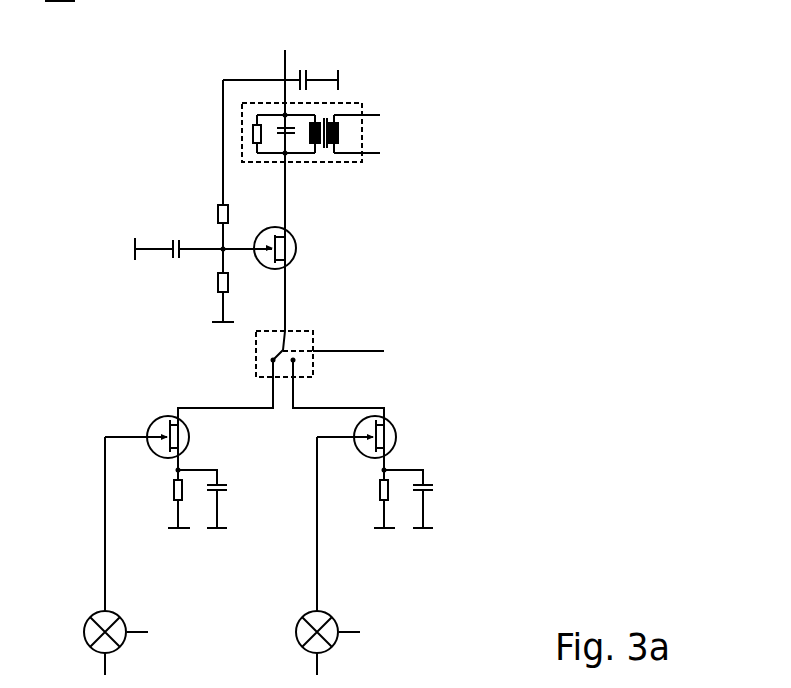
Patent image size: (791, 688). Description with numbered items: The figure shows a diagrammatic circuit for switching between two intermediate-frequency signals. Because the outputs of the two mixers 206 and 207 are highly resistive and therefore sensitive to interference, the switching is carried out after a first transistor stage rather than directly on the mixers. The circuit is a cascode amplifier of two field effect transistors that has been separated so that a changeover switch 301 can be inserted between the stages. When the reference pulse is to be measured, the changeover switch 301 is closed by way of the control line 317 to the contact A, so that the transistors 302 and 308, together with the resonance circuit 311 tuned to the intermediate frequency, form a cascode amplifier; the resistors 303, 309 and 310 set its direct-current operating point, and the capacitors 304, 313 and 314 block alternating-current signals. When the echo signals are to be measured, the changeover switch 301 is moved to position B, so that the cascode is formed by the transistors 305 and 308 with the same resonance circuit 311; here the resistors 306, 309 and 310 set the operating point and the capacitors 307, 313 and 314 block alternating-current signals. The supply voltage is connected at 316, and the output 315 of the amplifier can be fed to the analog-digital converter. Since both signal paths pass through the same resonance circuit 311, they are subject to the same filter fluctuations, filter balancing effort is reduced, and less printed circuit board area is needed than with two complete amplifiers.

The mixer 206 is at (83, 637).
The mixer 207 is at (293, 637).
The changeover switch 301 is at (313, 342).
The transistor 302 is at (150, 422).
The resistor 303 is at (172, 493).
The capacitor 304 is at (222, 480).
The transistor 305 is at (393, 430).
The resistor 306 is at (378, 495).
The capacitor 307 is at (427, 487).
The transistor 308 is at (297, 246).
The resistor 309 is at (218, 213).
The resistor 310 is at (218, 285).
The resonance circuit 311 is at (341, 149).
The capacitor 313 is at (307, 72).
The capacitor 314 is at (172, 242).
The output 315 is at (361, 134).
The supply voltage connection 316 is at (285, 57).
The control line 317 is at (377, 350).